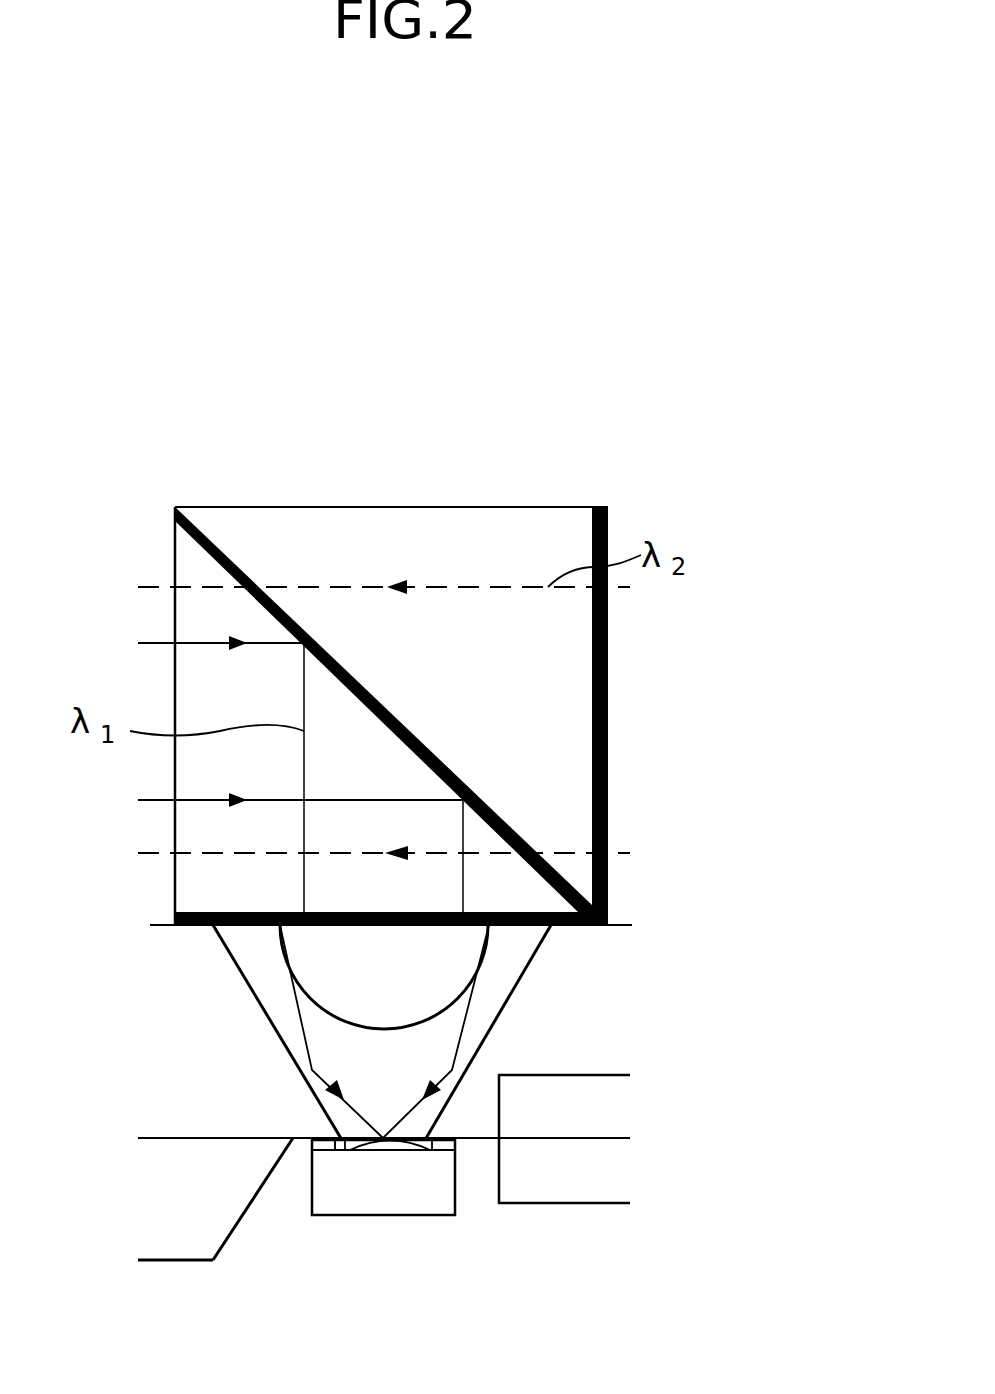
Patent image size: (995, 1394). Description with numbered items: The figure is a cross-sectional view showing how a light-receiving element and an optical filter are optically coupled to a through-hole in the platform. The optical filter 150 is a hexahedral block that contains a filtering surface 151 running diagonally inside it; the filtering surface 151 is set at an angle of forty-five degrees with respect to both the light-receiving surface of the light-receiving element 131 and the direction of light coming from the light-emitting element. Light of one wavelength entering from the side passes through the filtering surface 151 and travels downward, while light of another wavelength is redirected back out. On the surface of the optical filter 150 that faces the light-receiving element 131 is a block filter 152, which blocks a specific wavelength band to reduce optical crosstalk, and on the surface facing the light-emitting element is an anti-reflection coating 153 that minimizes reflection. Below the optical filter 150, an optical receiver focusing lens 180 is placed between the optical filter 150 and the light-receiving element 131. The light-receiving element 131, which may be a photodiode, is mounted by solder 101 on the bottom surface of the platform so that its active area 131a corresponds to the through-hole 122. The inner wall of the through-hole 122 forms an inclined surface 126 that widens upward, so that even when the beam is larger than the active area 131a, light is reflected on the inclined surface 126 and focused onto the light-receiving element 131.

The optical filter 150 is at (539, 448).
The filtering surface 151 is at (224, 546).
The block filter 152 is at (395, 925).
The anti-reflection coating 153 is at (608, 728).
The optical receiver focusing lens 180 is at (468, 958).
The inclined surface 126 is at (240, 962).
The solder 101 is at (315, 1143).
The through-hole 122 is at (345, 1140).
The light-receiving element 131 is at (367, 1205).
The active area 131a is at (395, 1147).